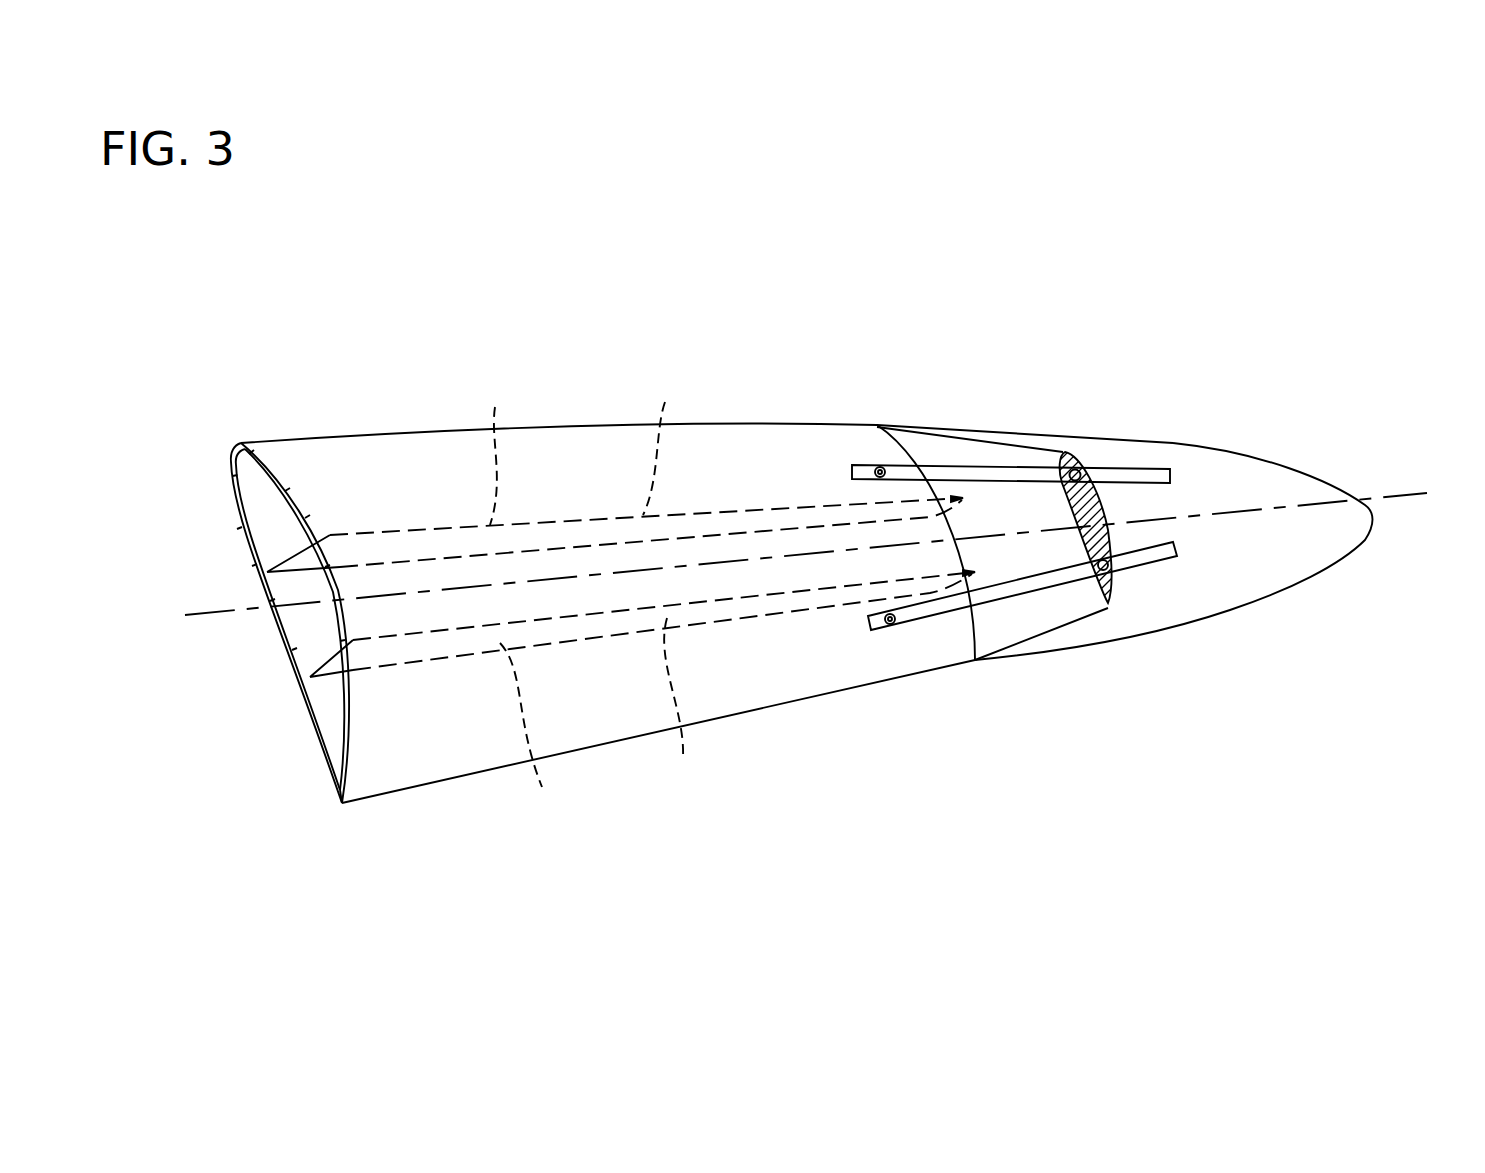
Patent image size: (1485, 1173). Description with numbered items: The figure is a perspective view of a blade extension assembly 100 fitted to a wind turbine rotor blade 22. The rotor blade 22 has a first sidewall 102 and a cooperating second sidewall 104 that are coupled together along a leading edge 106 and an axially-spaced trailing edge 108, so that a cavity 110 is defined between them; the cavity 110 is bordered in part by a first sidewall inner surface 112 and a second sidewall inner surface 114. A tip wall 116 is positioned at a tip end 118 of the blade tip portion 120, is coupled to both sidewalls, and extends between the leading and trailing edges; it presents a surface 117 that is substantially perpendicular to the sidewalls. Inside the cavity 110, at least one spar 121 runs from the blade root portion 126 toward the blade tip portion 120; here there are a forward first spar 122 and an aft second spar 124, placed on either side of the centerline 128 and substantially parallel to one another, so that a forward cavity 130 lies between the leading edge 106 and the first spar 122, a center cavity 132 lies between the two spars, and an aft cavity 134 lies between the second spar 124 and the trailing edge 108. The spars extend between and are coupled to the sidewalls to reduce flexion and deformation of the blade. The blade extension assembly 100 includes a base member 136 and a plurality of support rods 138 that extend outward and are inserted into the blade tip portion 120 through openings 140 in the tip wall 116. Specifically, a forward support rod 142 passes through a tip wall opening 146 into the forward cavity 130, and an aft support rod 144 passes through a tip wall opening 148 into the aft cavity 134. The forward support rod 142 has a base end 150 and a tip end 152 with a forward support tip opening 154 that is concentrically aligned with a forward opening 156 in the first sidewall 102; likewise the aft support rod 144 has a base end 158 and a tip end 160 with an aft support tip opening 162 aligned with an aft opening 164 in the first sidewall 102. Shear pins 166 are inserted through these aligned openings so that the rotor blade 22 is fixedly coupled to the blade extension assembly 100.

The blade extension assembly 100 is at (1215, 285).
The rotor blade 22 is at (385, 318).
The first sidewall 102 is at (242, 458).
The second sidewall 104 is at (252, 560).
The leading edge 106 is at (547, 427).
The trailing edge 108 is at (587, 757).
The cavity 110 is at (262, 513).
The first sidewall inner surface 112 is at (347, 713).
The second sidewall inner surface 114 is at (313, 644).
The tip wall 116 is at (1083, 465).
The surface 117 is at (1090, 507).
The tip end 118 is at (1100, 607).
The blade tip portion 120 is at (946, 752).
The spar 121 is at (524, 600).
The first spar 122 is at (666, 444).
The second spar 124 is at (686, 706).
The blade root portion 126 is at (275, 865).
The centerline 128 is at (1400, 493).
The forward cavity 130 is at (586, 478).
The center cavity 132 is at (700, 598).
The aft cavity 134 is at (612, 705).
The base member 136 is at (1207, 618).
The support rods 138 is at (1170, 468).
The openings 140 is at (1081, 470).
The forward support rod 142 is at (977, 463).
The aft support rod 144 is at (987, 593).
The tip wall opening 146 is at (1073, 470).
The tip wall opening 148 is at (1099, 568).
The base end 150 is at (1170, 484).
The tip end 152 is at (865, 455).
The forward support tip opening 154 is at (873, 478).
The forward opening 156 is at (880, 467).
The base end 158 is at (1173, 541).
The tip end 160 is at (868, 632).
The aft support tip opening 162 is at (893, 624).
The aft opening 164 is at (890, 613).
The shear pins 166 is at (884, 468).